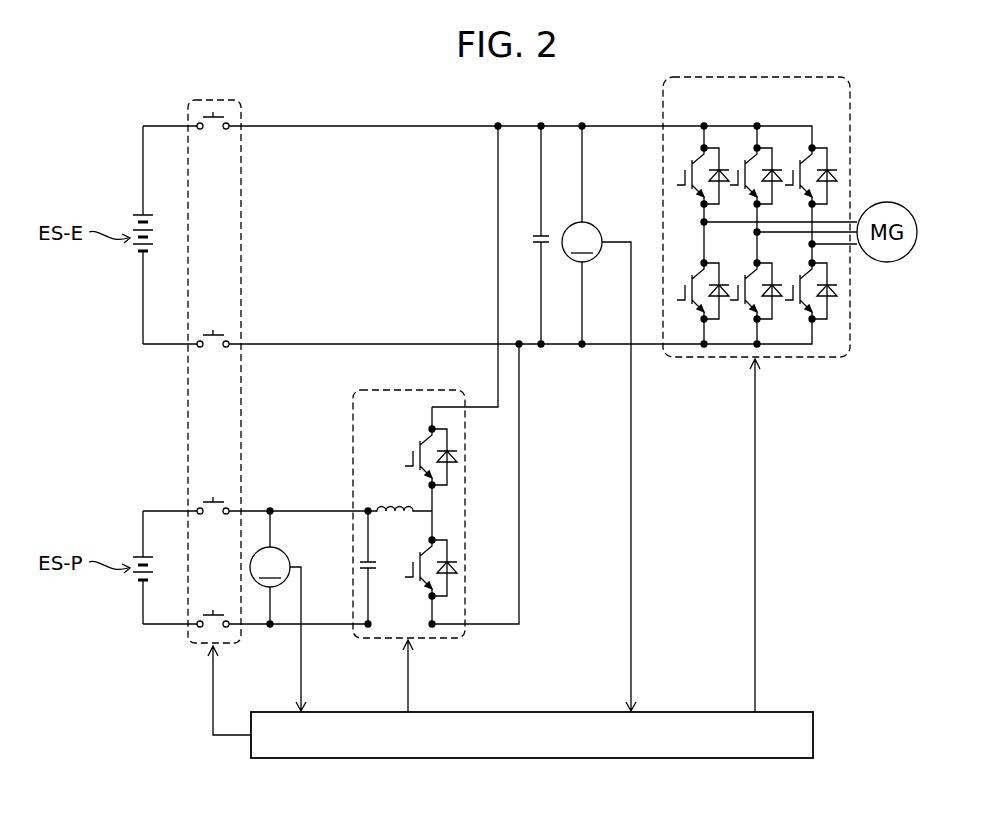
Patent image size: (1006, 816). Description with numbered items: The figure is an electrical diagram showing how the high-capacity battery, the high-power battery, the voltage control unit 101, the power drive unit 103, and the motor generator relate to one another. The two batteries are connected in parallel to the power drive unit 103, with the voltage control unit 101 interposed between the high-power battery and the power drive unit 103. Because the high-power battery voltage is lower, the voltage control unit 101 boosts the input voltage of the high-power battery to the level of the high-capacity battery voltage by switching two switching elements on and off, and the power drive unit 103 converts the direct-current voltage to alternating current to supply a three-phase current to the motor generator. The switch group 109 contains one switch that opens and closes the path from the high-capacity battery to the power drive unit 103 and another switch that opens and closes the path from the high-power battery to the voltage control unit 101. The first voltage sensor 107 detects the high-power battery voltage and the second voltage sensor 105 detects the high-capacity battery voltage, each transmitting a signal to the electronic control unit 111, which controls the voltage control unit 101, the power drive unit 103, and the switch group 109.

The voltage control unit (VCU) 101 is at (351, 427).
The power drive unit (PDU) 103 is at (850, 145).
The V2 sensor 105 is at (598, 229).
The V1 sensor 107 is at (289, 559).
The switch group 109 is at (186, 423).
The electronic control unit (ECU) 111 is at (814, 736).